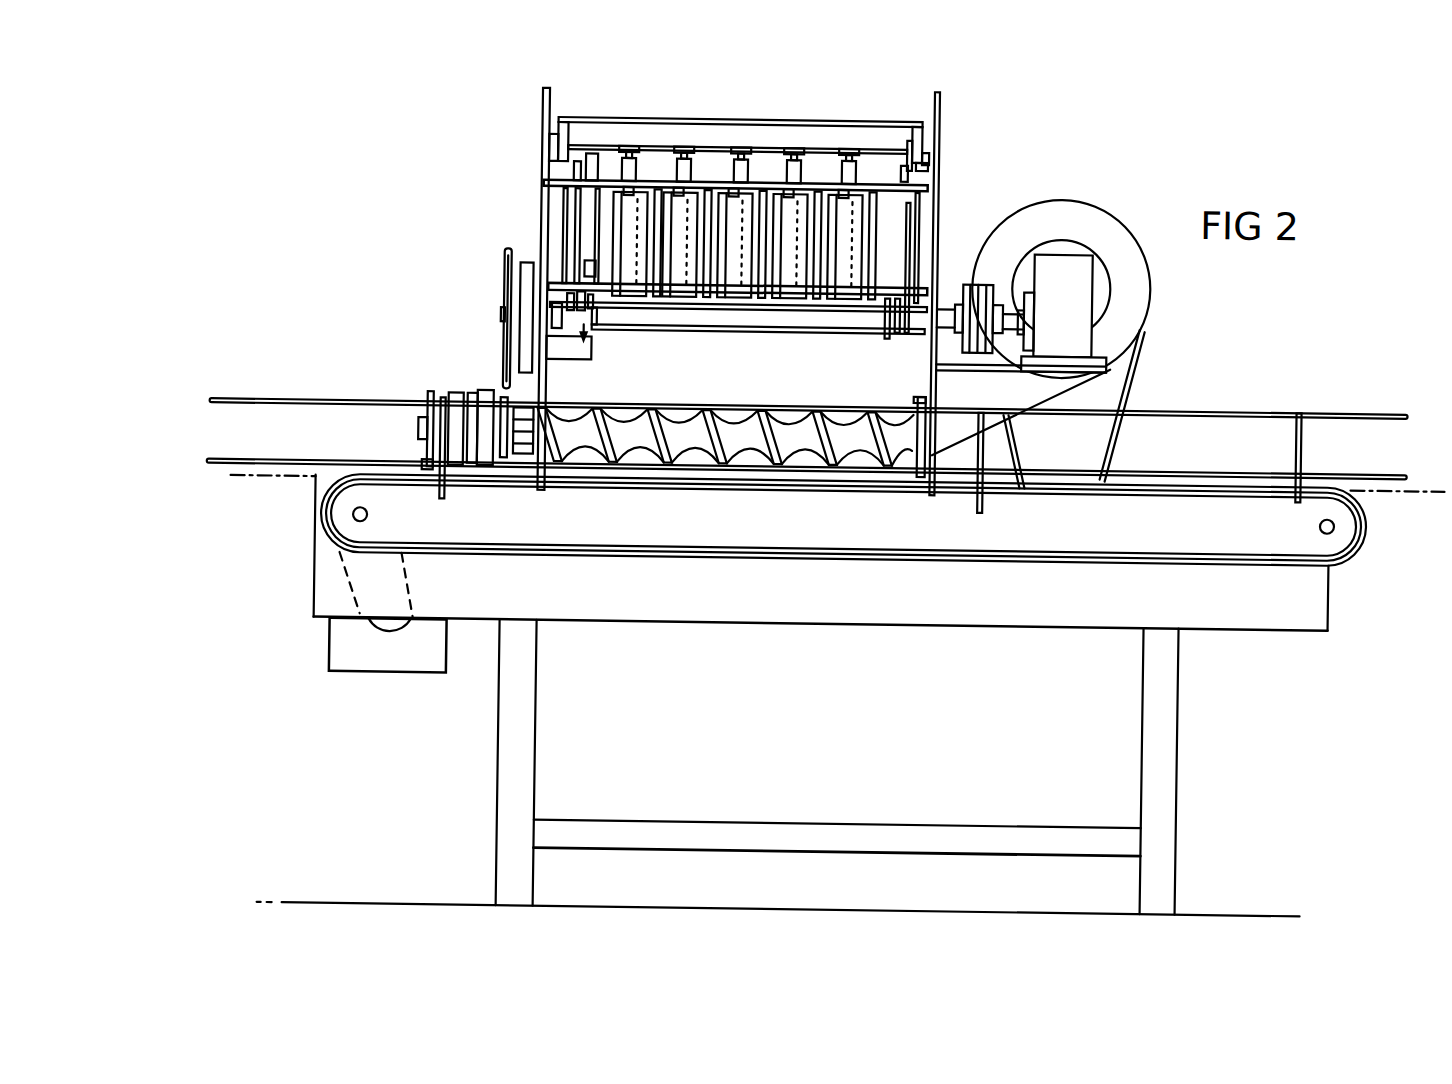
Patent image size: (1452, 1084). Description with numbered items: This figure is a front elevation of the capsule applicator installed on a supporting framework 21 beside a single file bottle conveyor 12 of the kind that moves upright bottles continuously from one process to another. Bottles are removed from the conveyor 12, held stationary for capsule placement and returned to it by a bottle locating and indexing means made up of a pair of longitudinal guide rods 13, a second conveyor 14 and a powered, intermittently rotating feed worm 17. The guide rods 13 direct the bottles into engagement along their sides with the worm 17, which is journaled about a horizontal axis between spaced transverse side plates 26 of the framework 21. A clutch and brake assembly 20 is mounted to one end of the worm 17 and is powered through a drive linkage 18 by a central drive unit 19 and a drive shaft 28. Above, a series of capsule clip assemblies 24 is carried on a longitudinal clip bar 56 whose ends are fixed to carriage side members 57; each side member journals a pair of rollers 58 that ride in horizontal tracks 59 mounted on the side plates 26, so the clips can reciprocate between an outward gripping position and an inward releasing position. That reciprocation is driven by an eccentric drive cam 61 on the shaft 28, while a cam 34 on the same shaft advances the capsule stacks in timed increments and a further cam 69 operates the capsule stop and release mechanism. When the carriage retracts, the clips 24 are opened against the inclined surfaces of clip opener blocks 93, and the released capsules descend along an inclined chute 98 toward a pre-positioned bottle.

The bottle conveyor 12 is at (1393, 491).
The longitudinal guide rods 13 is at (334, 468).
The second conveyor 14 is at (513, 545).
The feed worm 17 is at (733, 442).
The drive linkage 18 is at (503, 345).
The central drive unit 19 is at (1058, 194).
The clutch and brake assembly 20 is at (448, 398).
The supporting framework 21 is at (1138, 688).
The capsule clip assemblies 24 is at (800, 146).
The side plates 26 is at (538, 98).
The drive shaft 28 is at (807, 318).
The cam 34 is at (586, 311).
The clip bar 56 is at (738, 118).
The carriage side members 57 is at (920, 130).
The rollers 58 is at (925, 153).
The tracks 59 is at (928, 165).
The eccentric drive cam 61 is at (920, 328).
The cam 69 is at (885, 318).
The clip opener blocks 93 is at (682, 170).
The inclined guide or chute 98 is at (630, 290).